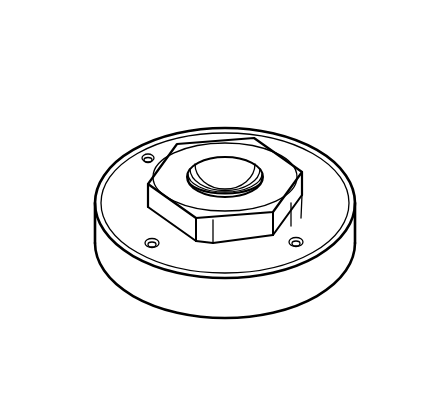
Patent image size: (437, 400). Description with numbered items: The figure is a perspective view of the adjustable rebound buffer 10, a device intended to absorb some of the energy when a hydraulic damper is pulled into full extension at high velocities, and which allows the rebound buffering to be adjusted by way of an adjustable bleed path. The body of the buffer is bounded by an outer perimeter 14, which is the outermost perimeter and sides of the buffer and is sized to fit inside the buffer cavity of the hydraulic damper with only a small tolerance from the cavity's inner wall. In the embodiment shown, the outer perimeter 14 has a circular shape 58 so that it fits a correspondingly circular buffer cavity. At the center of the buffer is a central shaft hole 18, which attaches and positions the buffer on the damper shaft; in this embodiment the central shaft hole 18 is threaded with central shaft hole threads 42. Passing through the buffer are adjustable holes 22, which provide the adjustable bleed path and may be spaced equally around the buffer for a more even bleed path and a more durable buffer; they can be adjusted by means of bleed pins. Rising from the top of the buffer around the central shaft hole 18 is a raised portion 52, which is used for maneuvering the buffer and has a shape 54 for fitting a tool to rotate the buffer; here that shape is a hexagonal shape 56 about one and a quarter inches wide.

The adjustable rebound buffer 10 is at (156, 68).
The outer perimeter 14 is at (346, 256).
The central shaft hole 18 is at (242, 168).
The adjustable hole 22 is at (144, 153).
The central shaft hole threads 42 is at (213, 182).
The raised portion 52 is at (326, 207).
The shape 54 is at (155, 217).
The hexagonal shape 56 is at (126, 226).
The circular shape 58 is at (183, 302).